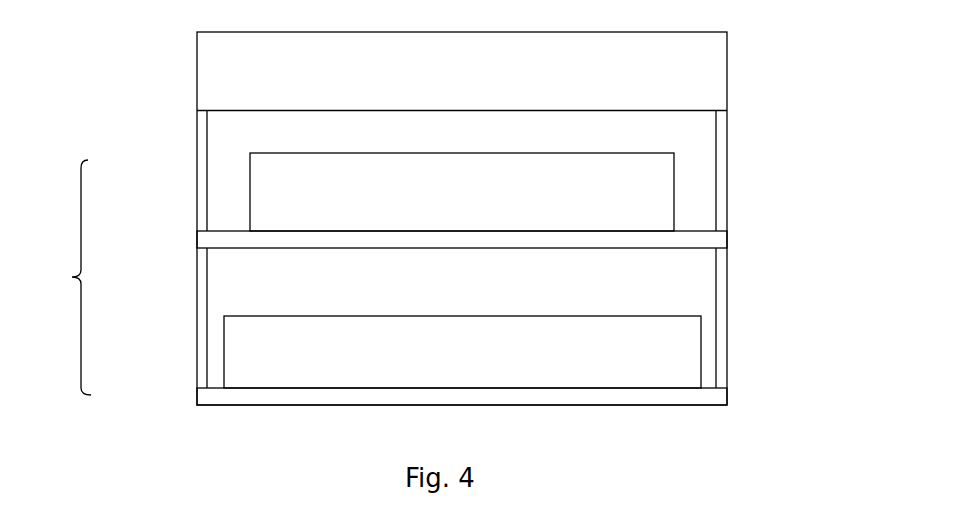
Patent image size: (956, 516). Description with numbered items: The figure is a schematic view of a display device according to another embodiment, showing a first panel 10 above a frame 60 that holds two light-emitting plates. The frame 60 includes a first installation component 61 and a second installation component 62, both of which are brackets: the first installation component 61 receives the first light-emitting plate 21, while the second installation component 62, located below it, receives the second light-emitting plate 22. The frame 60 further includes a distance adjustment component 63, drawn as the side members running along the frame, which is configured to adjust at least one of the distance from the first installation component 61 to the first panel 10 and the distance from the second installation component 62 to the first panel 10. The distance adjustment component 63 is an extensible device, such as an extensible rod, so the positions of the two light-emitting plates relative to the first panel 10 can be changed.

The first panel 10 is at (728, 65).
The first light-emitting plate 21 is at (676, 187).
The second light-emitting plate 22 is at (676, 355).
The frame 60 is at (58, 277).
The first installation component 61 is at (243, 239).
The second installation component 62 is at (243, 396).
The distance adjustment component 63 is at (202, 283).